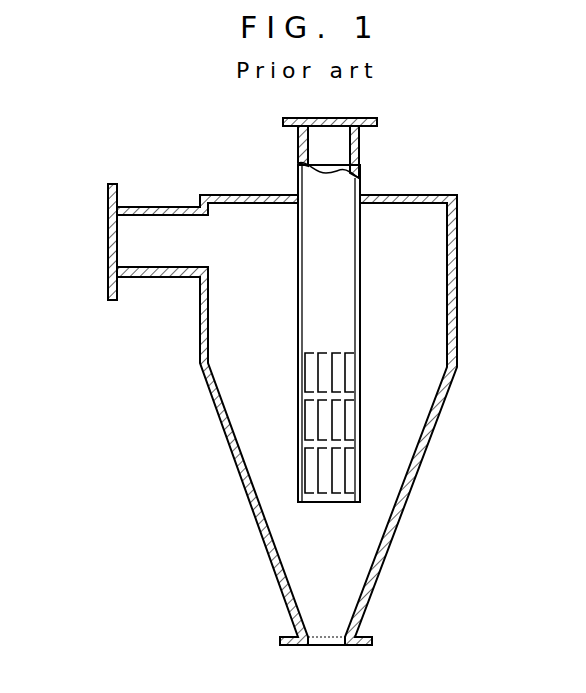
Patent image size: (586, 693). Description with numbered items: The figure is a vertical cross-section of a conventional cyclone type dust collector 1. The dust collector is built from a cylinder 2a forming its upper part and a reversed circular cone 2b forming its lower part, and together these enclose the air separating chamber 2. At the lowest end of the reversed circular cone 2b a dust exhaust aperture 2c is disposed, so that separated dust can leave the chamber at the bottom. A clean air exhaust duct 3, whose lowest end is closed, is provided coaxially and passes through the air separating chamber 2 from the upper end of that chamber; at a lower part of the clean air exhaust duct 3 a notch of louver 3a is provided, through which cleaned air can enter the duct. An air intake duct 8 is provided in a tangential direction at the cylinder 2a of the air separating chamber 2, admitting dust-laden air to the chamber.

The cyclone type dust collector 1 is at (290, 390).
The air separating chamber 2 is at (290, 399).
The cylinder 2a is at (457, 275).
The reversed circular cone 2b is at (321, 420).
The dust exhaust aperture 2c is at (325, 640).
The clean air exhaust duct 3 is at (404, 333).
The notch of louver 3a is at (355, 420).
The air intake duct 8 is at (122, 245).